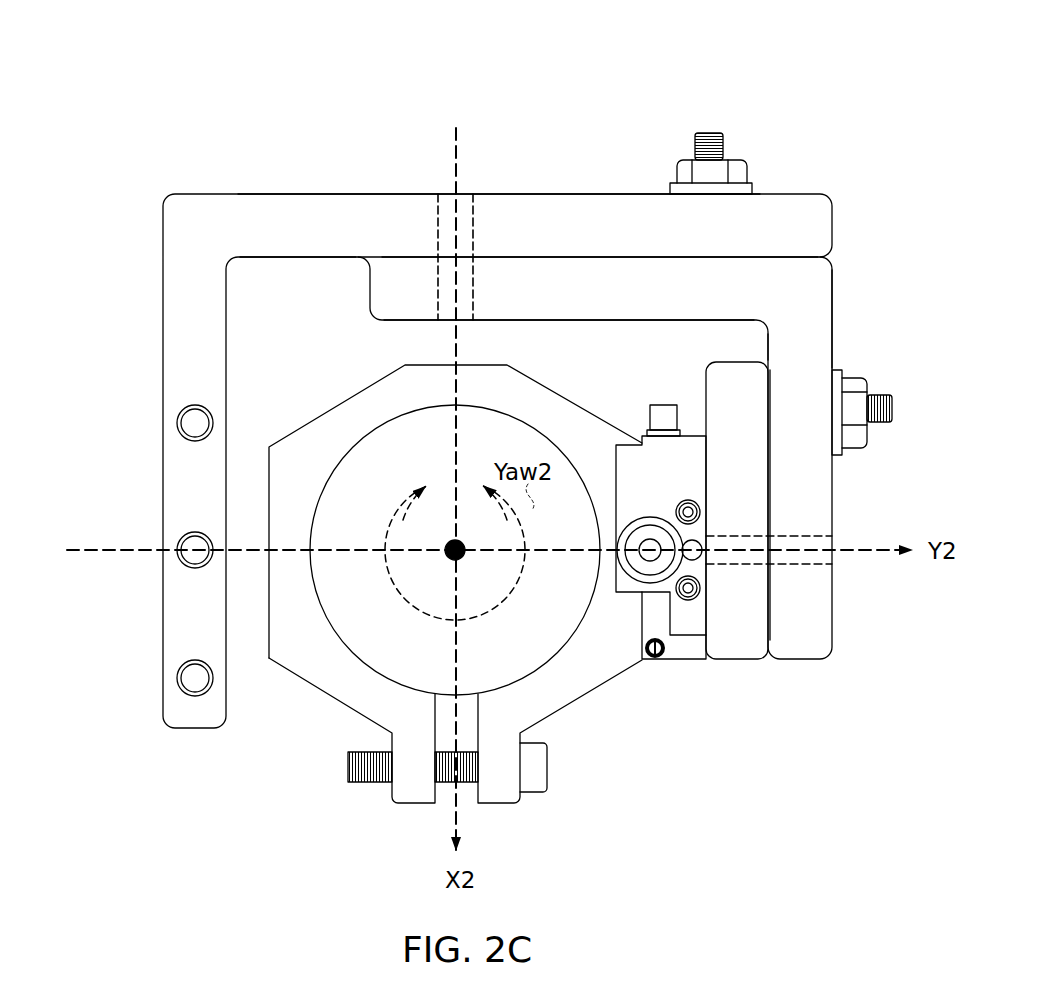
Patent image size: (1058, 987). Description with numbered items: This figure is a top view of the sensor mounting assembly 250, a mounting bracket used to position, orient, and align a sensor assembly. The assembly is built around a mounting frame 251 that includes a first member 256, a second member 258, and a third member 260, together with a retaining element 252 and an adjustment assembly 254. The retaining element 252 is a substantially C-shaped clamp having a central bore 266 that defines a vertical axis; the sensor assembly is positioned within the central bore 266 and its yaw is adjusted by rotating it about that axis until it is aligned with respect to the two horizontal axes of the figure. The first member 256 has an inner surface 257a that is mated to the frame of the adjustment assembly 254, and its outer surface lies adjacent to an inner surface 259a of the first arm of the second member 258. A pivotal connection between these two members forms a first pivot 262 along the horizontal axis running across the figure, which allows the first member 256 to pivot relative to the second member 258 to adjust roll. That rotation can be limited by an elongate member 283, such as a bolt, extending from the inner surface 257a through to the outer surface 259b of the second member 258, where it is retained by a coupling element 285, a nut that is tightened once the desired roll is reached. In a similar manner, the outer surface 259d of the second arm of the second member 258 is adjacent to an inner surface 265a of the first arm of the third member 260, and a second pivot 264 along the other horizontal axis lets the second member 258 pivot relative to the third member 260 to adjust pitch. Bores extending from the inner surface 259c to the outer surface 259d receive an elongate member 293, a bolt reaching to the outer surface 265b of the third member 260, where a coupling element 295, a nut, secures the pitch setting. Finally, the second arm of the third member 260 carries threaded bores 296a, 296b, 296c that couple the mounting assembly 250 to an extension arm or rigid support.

The sensor mounting assembly 250 is at (814, 53).
The mounting frame 251 is at (836, 224).
The retaining element 252 is at (342, 710).
The adjustment assembly 254 is at (676, 672).
The first member 256 is at (735, 660).
The inner surface of the first member 257a is at (706, 380).
The second member 258 is at (803, 660).
The inner surface of the first arm of the second member 259a is at (767, 340).
The outer surface of the first arm of the second member 259b is at (833, 292).
The inner surface of the second arm of the second member 259c is at (610, 322).
The outer surface of the second arm of the second member 259d is at (596, 256).
The third member 260 is at (405, 193).
The first pivot 262 is at (804, 536).
The second pivot 264 is at (476, 208).
The inner surface of the first arm of the third member 265a is at (323, 258).
The outer surface of the first arm of the third member 265b is at (333, 193).
The central bore 266 is at (358, 620).
The elongate member 283 is at (893, 409).
The coupling element 285 is at (840, 371).
The elongate member 293 is at (708, 132).
The coupling element 295 is at (752, 176).
The bore 296a is at (177, 423).
The bore 296b is at (177, 549).
The bore 296c is at (177, 678).